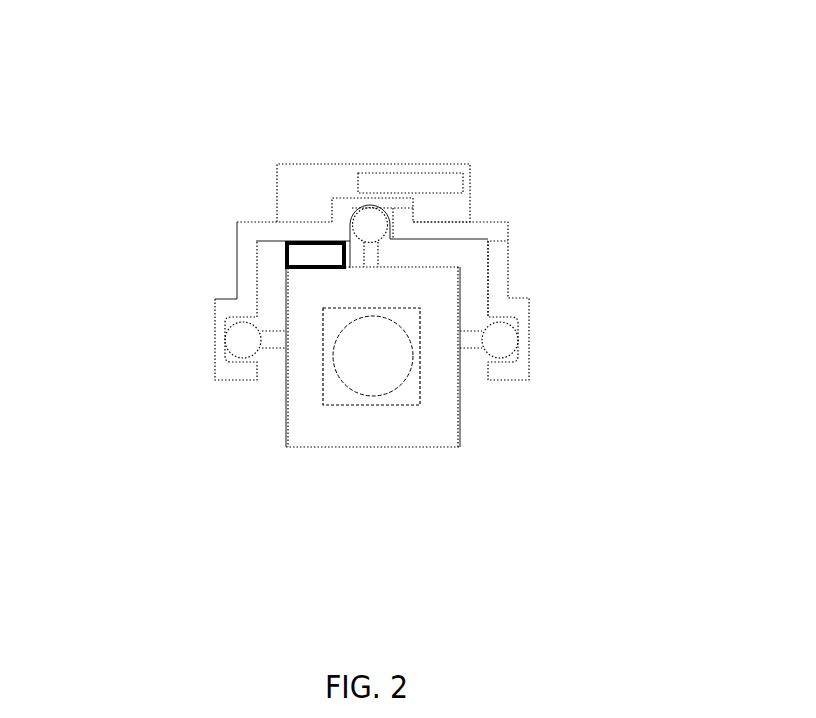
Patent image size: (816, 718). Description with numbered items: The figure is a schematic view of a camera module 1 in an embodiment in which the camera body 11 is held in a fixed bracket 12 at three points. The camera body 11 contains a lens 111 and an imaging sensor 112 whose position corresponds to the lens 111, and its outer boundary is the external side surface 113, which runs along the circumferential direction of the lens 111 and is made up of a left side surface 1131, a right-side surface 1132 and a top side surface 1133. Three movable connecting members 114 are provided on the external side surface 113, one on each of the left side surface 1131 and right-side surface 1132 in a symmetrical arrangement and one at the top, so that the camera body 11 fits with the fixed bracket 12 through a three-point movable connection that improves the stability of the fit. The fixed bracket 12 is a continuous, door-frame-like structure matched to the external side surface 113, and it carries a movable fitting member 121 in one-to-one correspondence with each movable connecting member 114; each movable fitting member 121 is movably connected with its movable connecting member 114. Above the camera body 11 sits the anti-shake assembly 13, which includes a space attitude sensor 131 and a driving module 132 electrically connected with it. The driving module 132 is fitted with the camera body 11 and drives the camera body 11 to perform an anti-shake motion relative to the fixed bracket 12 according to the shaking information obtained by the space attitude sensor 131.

The camera module 1 is at (210, 112).
The camera body 11 is at (305, 398).
The lens 111 is at (358, 374).
The imaging sensor 112 is at (343, 407).
The external side surface 113 is at (461, 318).
The left side surface 1131 is at (287, 352).
The right-side surface 1132 is at (460, 393).
The top side surface 1133 is at (407, 268).
The movable connecting member 114 is at (250, 340).
The fixed bracket 12 is at (262, 240).
The movable fitting member 121 is at (226, 330).
The anti-shake assembly 13 is at (543, 66).
The space attitude sensor 131 is at (432, 173).
The driving module 132 is at (303, 260).